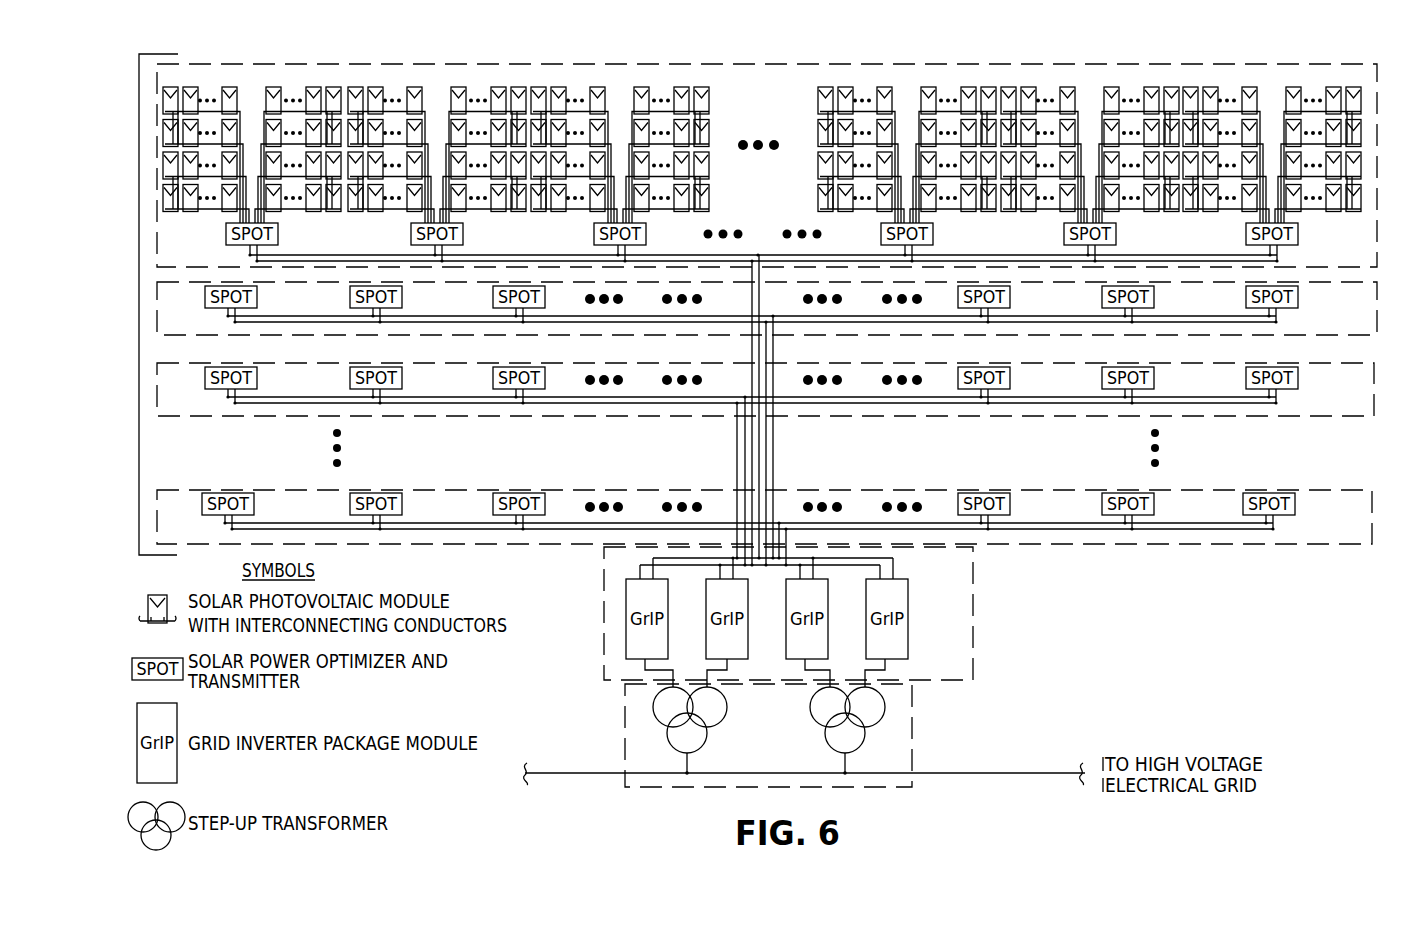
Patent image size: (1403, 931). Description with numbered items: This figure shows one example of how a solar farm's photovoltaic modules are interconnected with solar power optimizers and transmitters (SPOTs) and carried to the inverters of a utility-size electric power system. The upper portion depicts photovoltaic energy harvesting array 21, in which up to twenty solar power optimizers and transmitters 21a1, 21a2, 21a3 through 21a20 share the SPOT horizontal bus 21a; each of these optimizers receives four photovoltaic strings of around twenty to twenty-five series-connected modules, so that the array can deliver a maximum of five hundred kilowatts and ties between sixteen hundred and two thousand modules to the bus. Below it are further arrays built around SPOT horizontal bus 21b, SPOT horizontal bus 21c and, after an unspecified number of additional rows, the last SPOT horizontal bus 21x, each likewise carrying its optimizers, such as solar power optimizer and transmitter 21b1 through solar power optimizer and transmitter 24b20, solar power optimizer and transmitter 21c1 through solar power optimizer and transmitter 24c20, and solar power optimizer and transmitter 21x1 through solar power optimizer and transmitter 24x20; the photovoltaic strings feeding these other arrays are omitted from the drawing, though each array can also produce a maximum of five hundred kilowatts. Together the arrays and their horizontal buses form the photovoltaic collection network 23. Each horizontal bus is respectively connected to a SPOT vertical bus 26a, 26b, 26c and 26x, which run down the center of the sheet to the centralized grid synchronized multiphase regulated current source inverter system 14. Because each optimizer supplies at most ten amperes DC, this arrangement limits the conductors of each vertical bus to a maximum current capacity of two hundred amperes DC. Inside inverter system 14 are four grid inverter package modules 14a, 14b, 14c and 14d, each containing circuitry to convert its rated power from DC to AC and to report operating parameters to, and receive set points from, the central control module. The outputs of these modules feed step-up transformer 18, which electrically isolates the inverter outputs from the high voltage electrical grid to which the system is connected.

The photovoltaic energy harvesting array 21 is at (313, 72).
The SPOT horizontal bus 21a is at (258, 262).
The solar power optimizer and transmitter 21a1 is at (278, 237).
The solar power optimizer and transmitter 21a2 is at (463, 237).
The solar power optimizer and transmitter 21a3 is at (646, 237).
The solar power optimizer and transmitter 21a20 is at (1298, 237).
The SPOT horizontal bus 21b is at (236, 323).
The solar power optimizer and transmitter 21b1 is at (257, 297).
The solar power optimizer and transmitter 24b20 is at (1298, 298).
The SPOT horizontal bus 21c is at (236, 404).
The solar power optimizer and transmitter 21c1 is at (257, 378).
The solar power optimizer and transmitter 24c20 is at (1298, 379).
The SPOT horizontal bus 21x is at (233, 531).
The solar power optimizer and transmitter 21x1 is at (254, 505).
The solar power optimizer and transmitter 24x20 is at (1295, 505).
The photovoltaic collection network 23 is at (139, 304).
The SPOT vertical bus 26a is at (763, 293).
The SPOT vertical bus 26b is at (778, 348).
The SPOT vertical bus 26c is at (732, 427).
The SPOT vertical bus 26x is at (792, 537).
The centralized grid synchronized multiphase regulated current source inverter syste 14 is at (812, 617).
The grid inverter package module 14a is at (665, 599).
The grid inverter package module 14b is at (746, 599).
The grid inverter package module 14c is at (826, 599).
The grid inverter package module 14d is at (906, 599).
The step-up transformer 18 is at (903, 731).